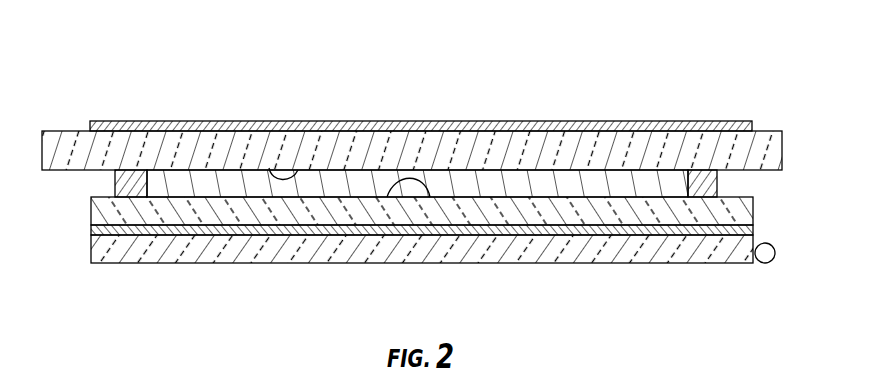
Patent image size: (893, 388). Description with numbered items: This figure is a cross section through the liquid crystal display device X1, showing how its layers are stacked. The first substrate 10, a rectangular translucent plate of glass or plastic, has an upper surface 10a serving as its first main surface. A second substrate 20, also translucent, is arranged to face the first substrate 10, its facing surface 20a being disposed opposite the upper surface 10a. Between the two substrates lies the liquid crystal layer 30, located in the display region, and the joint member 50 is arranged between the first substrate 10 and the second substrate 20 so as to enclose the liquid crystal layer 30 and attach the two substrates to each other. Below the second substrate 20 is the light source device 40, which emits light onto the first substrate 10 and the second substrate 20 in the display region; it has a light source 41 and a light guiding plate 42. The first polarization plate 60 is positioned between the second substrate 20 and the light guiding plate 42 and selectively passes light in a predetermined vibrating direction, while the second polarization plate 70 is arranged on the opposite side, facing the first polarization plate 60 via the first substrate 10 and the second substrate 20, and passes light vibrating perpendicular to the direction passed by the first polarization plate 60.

The solar cell module X1 is at (500, 86).
The first substrate 10 is at (202, 143).
The upper surface 10a is at (269, 168).
The second polarization plate 70 is at (363, 121).
The joint member 50 is at (133, 188).
The liquid crystal layer 30 is at (584, 178).
The second substrate 20 is at (308, 213).
The facing surface 20a is at (387, 197).
The first polarization plate 60 is at (138, 234).
The light source device 40 is at (433, 297).
The light source 41 is at (765, 264).
The light guiding plate 42 is at (720, 264).